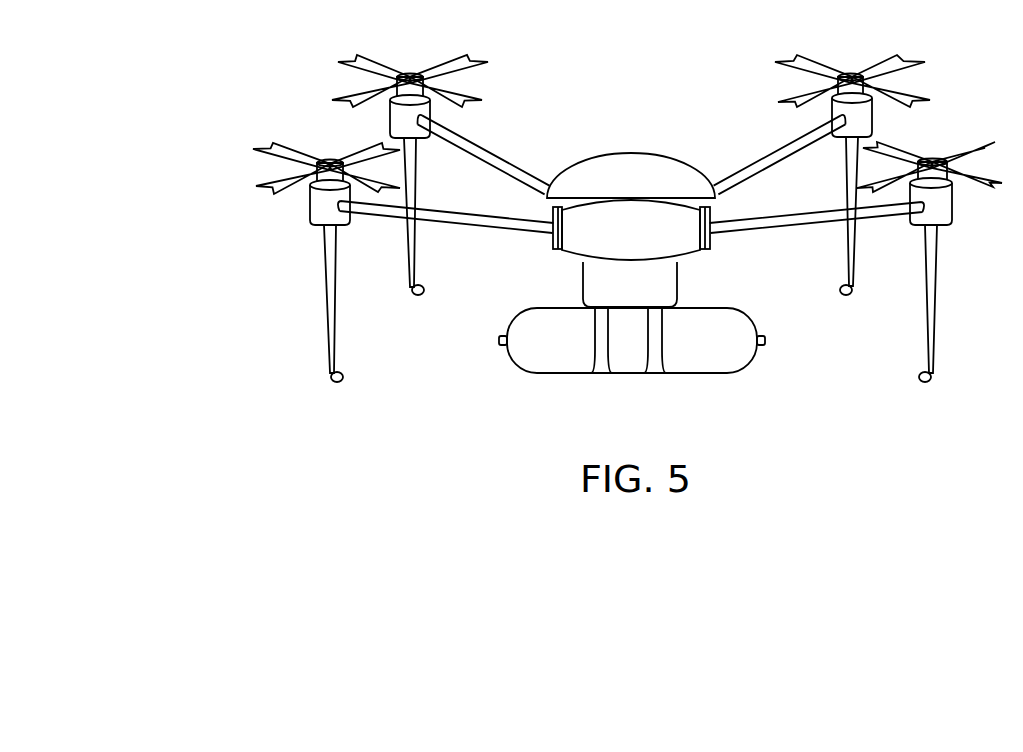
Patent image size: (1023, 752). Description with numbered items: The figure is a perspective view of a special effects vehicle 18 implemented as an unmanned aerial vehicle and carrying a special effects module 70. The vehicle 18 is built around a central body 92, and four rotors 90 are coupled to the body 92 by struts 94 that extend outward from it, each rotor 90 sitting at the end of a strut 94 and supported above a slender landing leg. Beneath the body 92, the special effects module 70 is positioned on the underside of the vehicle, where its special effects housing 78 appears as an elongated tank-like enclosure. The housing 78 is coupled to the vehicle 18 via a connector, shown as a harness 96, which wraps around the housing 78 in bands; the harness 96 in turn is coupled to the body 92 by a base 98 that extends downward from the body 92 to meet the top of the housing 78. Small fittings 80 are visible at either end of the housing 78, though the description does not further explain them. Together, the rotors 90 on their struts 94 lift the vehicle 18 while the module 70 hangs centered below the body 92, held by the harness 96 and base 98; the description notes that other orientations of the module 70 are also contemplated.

The special effects vehicle 18 is at (266, 76).
The special effects module 70 is at (802, 328).
The special effects housing 78 is at (538, 373).
The end fittings 80 is at (500, 341).
The rotors 90 is at (252, 158).
The body 92 is at (621, 152).
The struts 94 is at (450, 222).
The harness 96 is at (657, 373).
The base 98 is at (677, 280).